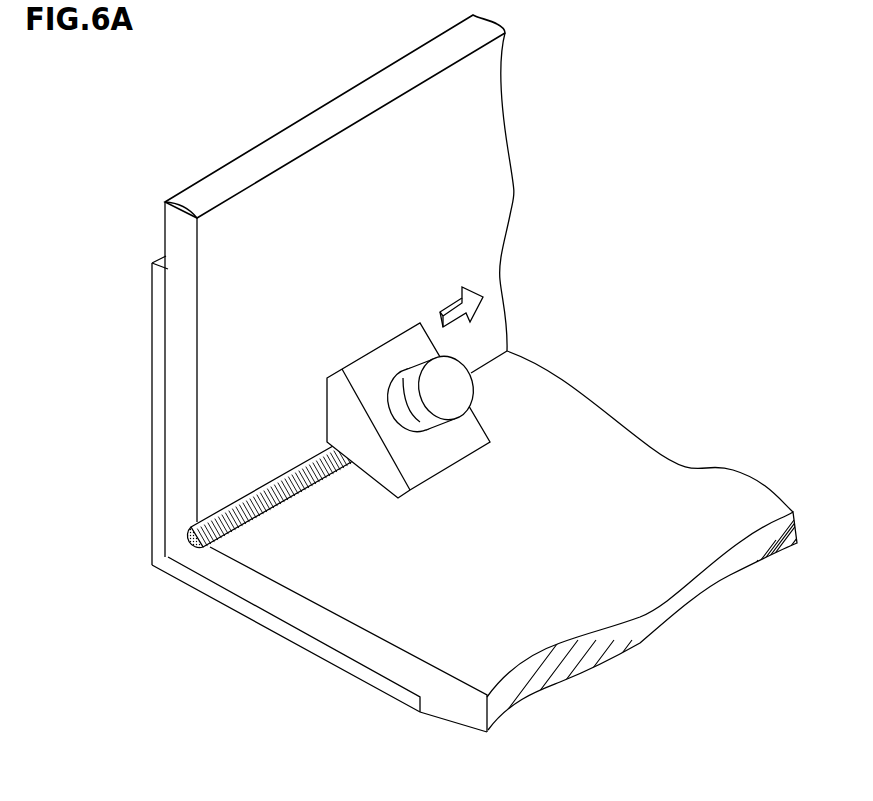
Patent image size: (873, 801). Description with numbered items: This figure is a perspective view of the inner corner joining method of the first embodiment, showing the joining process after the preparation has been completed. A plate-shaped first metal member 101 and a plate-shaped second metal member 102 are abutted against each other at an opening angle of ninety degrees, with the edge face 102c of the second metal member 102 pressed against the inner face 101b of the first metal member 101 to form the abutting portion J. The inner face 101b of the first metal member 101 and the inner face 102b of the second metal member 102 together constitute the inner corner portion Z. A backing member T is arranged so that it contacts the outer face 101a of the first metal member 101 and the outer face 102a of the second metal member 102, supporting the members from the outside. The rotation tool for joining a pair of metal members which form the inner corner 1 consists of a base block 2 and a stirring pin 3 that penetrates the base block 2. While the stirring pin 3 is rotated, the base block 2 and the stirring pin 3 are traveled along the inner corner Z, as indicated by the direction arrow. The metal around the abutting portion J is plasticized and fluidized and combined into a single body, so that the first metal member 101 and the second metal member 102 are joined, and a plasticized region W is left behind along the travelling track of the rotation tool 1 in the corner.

The first metal member 101 is at (436, 709).
The outer face of the first metal member 101a is at (462, 722).
The inner face of the first metal member 101b is at (520, 656).
The second metal member 102 is at (150, 222).
The outer face of the second metal member 102a is at (166, 257).
The inner face of the second metal member 102b is at (210, 298).
The edge face of the second metal member 102c is at (170, 525).
The rotation tool for joining a pair of metal members which form the inner corner 1 is at (401, 417).
The base block 2 is at (346, 355).
The stirring pin 3 is at (412, 356).
The plasticized region W is at (263, 514).
The abutting portion J is at (166, 513).
The backing member T is at (236, 604).
The inner corner portion Z is at (494, 365).